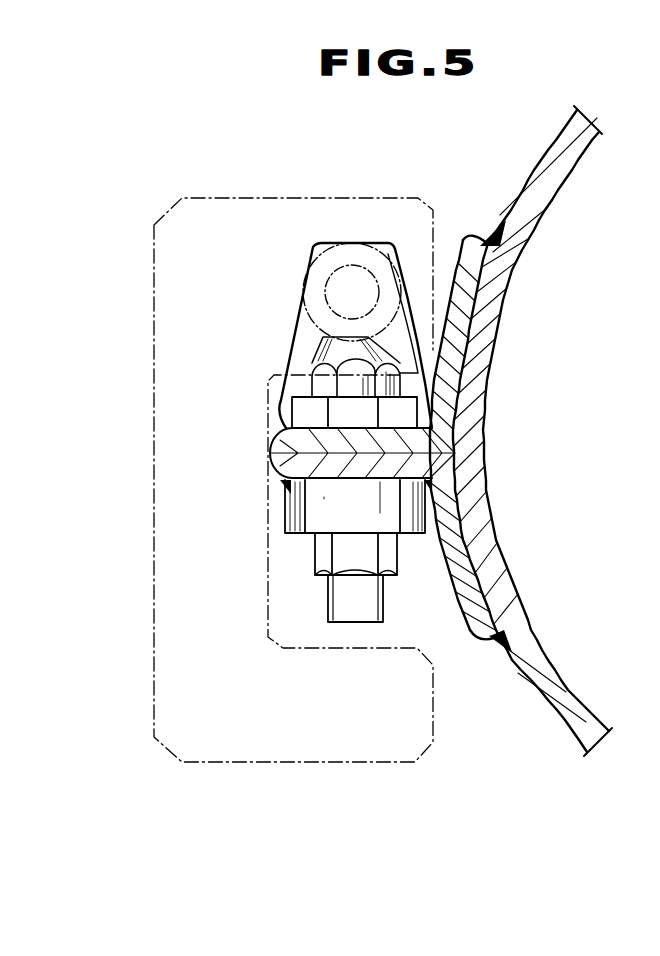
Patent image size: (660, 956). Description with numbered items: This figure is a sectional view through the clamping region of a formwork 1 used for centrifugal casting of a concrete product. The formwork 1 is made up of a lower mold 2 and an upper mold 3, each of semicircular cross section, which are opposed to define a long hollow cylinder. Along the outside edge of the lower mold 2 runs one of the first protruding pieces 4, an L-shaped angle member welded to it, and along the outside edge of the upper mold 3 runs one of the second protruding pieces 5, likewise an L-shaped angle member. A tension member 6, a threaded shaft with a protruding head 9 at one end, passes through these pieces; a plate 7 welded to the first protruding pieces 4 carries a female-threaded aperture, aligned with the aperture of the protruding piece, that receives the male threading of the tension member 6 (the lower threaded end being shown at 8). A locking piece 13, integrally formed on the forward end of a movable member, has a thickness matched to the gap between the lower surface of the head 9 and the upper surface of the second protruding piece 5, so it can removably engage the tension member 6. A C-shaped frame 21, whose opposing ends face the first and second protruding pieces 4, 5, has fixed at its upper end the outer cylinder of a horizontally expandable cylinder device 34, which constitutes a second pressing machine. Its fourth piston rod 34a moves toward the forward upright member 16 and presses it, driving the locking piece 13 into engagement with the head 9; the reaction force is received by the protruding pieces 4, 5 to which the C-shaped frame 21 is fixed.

The formwork 1 is at (558, 207).
The lower mold 2 is at (578, 720).
The upper mold 3 is at (492, 298).
The first protruding pieces 4 is at (284, 466).
The second protruding pieces 5 is at (284, 439).
The tension member 6 is at (360, 612).
The plates 7 is at (284, 527).
The bolt head 8 is at (267, 633).
The head 9 is at (330, 353).
The locking piece 13 is at (305, 410).
The forward upright member 16 is at (313, 245).
The C-shaped frame 21 is at (153, 275).
The cylinder device 34 is at (403, 253).
The fourth piston rod 34a is at (358, 267).